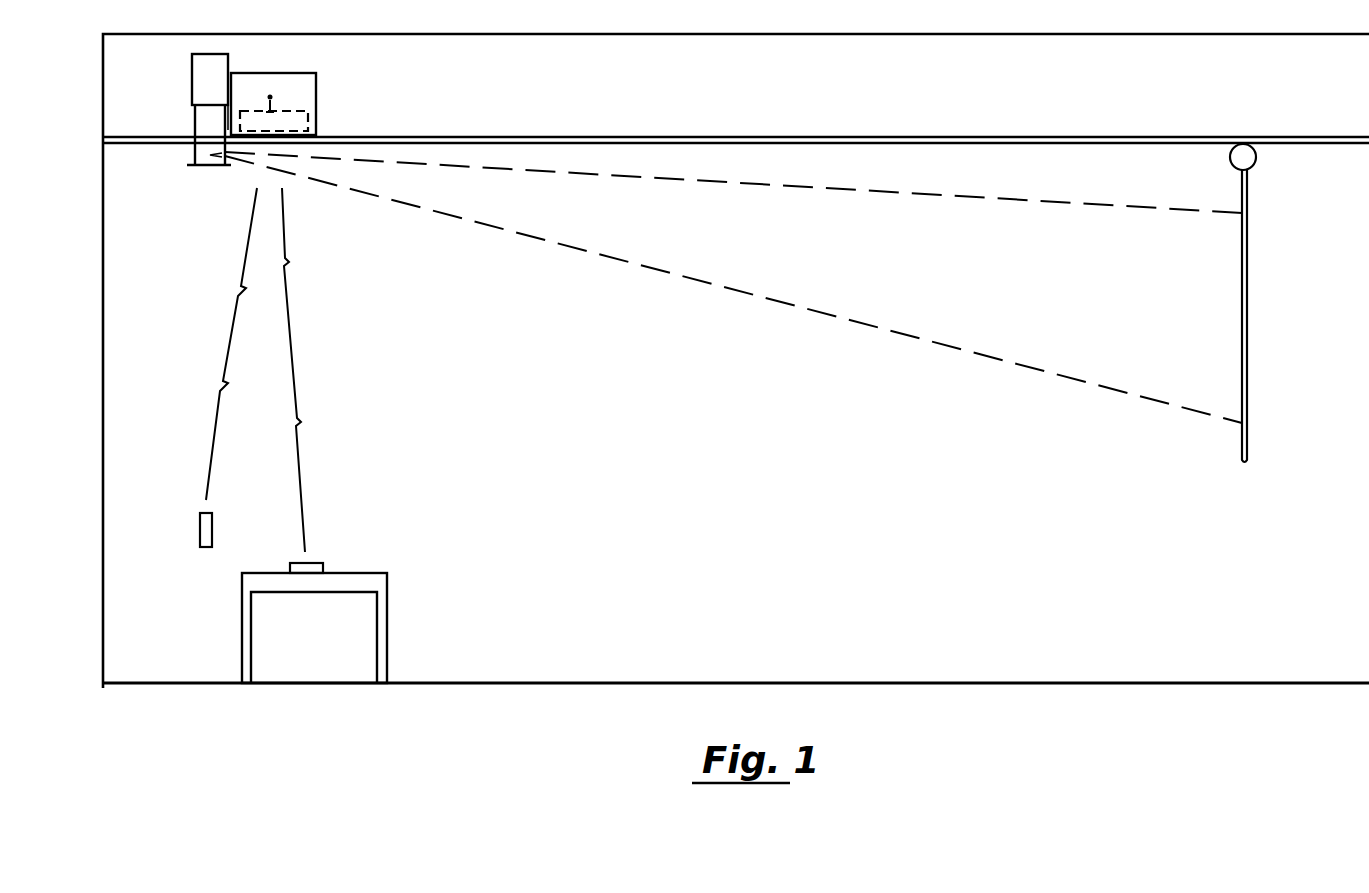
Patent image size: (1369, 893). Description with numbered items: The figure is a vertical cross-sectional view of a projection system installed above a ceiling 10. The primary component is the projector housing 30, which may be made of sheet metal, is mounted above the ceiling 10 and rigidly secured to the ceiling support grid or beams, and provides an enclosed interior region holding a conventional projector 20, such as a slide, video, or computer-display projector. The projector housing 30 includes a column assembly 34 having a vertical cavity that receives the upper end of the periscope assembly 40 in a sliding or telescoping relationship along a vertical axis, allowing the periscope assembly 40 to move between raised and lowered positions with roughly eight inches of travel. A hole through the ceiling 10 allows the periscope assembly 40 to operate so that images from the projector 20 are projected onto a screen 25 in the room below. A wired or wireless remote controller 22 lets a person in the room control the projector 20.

The ceiling 10 is at (558, 136).
The projector 20 is at (300, 112).
The remote controller 22 is at (292, 562).
The screen 25 is at (1247, 300).
The projector housing 30 is at (322, 76).
The column assembly 34 is at (205, 85).
The periscope assembly 40 is at (197, 158).